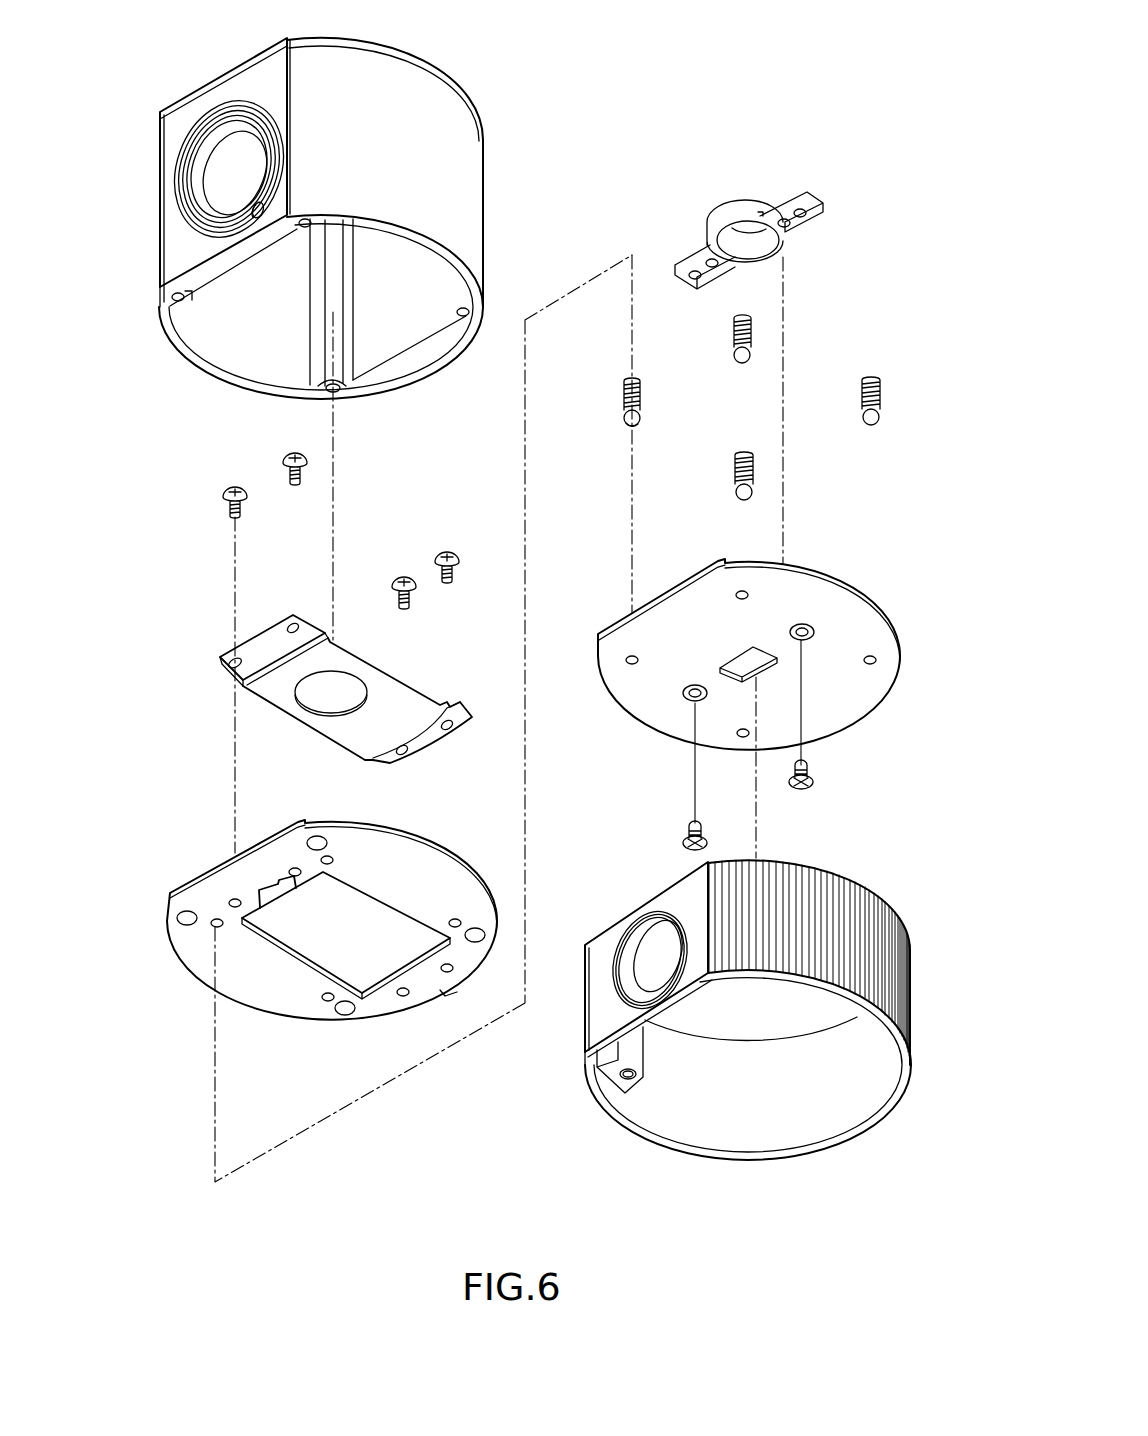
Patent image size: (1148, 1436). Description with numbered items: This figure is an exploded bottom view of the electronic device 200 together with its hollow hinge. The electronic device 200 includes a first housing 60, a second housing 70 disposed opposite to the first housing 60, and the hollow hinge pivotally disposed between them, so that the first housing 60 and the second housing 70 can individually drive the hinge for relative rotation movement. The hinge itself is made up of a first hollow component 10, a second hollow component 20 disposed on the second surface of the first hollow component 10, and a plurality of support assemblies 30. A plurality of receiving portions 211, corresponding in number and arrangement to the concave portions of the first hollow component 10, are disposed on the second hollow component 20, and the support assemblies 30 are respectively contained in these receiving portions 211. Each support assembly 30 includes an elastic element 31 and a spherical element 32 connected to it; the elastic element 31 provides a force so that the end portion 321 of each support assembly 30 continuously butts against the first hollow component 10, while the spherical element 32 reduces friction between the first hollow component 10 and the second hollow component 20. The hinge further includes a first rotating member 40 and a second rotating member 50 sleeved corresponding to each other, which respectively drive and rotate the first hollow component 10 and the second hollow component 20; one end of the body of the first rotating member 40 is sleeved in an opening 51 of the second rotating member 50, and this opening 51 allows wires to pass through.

The electronic device 200 is at (122, 76).
The second housing 70 is at (422, 98).
The second rotating member 50 is at (276, 700).
The opening 51 is at (332, 692).
The first rotating member 40 is at (739, 207).
The support assembly 30 is at (620, 374).
The elastic element 31 is at (626, 384).
The spherical element 32 is at (624, 416).
The end portion 321 is at (625, 423).
The first hollow component 10 is at (860, 710).
The first housing 60 is at (834, 900).
The second hollow component 20 is at (267, 1000).
The receiving portion 211 is at (457, 917).